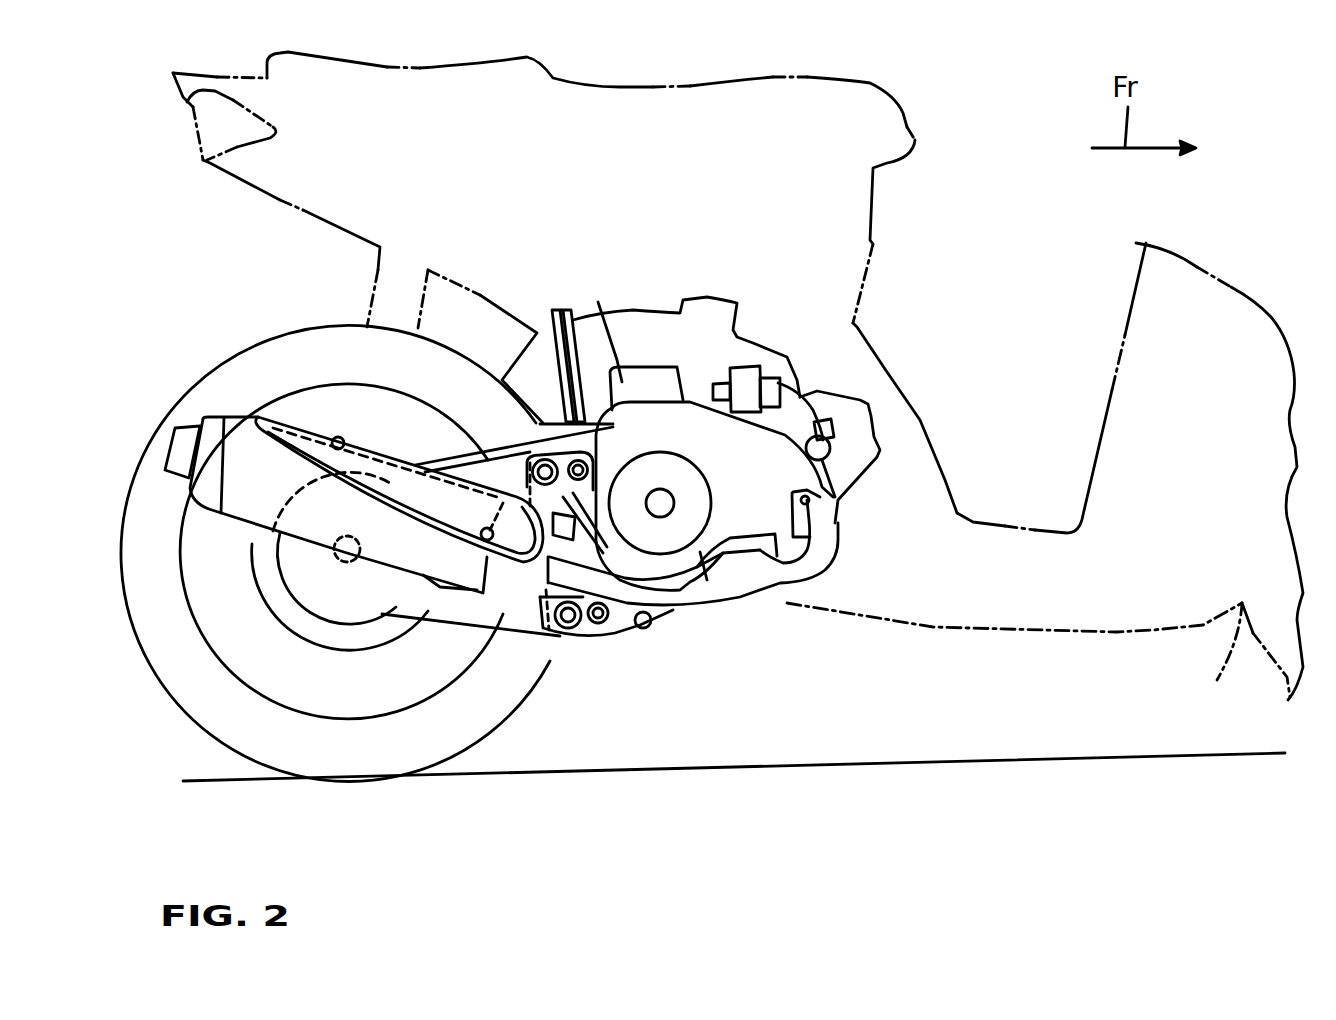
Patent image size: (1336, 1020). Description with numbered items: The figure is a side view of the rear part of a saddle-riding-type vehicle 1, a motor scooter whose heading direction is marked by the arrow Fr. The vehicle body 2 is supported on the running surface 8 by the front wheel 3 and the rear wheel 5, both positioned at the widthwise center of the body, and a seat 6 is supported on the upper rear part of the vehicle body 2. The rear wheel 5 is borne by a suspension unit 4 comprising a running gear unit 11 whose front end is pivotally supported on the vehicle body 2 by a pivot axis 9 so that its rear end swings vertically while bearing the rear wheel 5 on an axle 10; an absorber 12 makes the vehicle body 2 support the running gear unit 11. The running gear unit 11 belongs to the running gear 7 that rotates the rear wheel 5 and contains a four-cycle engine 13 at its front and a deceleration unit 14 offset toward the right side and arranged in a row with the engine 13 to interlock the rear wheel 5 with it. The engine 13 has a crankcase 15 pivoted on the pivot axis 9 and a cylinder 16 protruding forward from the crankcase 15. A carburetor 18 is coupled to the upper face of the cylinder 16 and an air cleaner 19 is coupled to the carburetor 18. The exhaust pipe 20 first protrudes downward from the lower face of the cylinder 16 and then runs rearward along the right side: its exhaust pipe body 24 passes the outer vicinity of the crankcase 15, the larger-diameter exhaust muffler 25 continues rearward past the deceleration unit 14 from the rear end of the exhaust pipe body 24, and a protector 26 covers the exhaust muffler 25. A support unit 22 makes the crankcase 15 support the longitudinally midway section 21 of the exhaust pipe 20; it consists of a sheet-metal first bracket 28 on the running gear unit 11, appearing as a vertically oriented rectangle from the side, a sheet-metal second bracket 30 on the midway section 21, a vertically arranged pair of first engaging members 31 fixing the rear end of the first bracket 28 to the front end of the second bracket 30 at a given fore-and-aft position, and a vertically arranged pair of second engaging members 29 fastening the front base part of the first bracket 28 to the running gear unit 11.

The saddle-riding-type vehicle 1 is at (1236, 253).
The vehicle body 2 is at (876, 243).
The front wheel 3 is at (1218, 680).
The suspension unit 4 is at (482, 406).
The rear wheel 5 is at (233, 720).
The seat 6 is at (878, 78).
The running gear 7 is at (748, 305).
The running surface 8 is at (992, 761).
The pivot axis 9 is at (647, 624).
The axle 10 is at (280, 620).
The running gear unit 11 is at (334, 624).
The absorber 12 is at (370, 297).
The four-cycle engine 13 is at (728, 680).
The deceleration unit 14 is at (387, 604).
The crankcase 15 is at (700, 550).
The cylinder 16 is at (780, 520).
The carburetor 18 is at (700, 310).
The air cleaner 19 is at (539, 330).
The exhaust pipe 20 is at (838, 553).
The midway section 21 is at (510, 582).
The support unit 22 is at (588, 447).
The exhaust pipe body 24 is at (830, 578).
The exhaust muffler 25 is at (240, 497).
The protector 26 is at (291, 418).
The first bracket 28 is at (607, 633).
The second engaging members 29 is at (596, 625).
The second bracket 30 is at (565, 628).
The first engaging members 31 is at (553, 637).